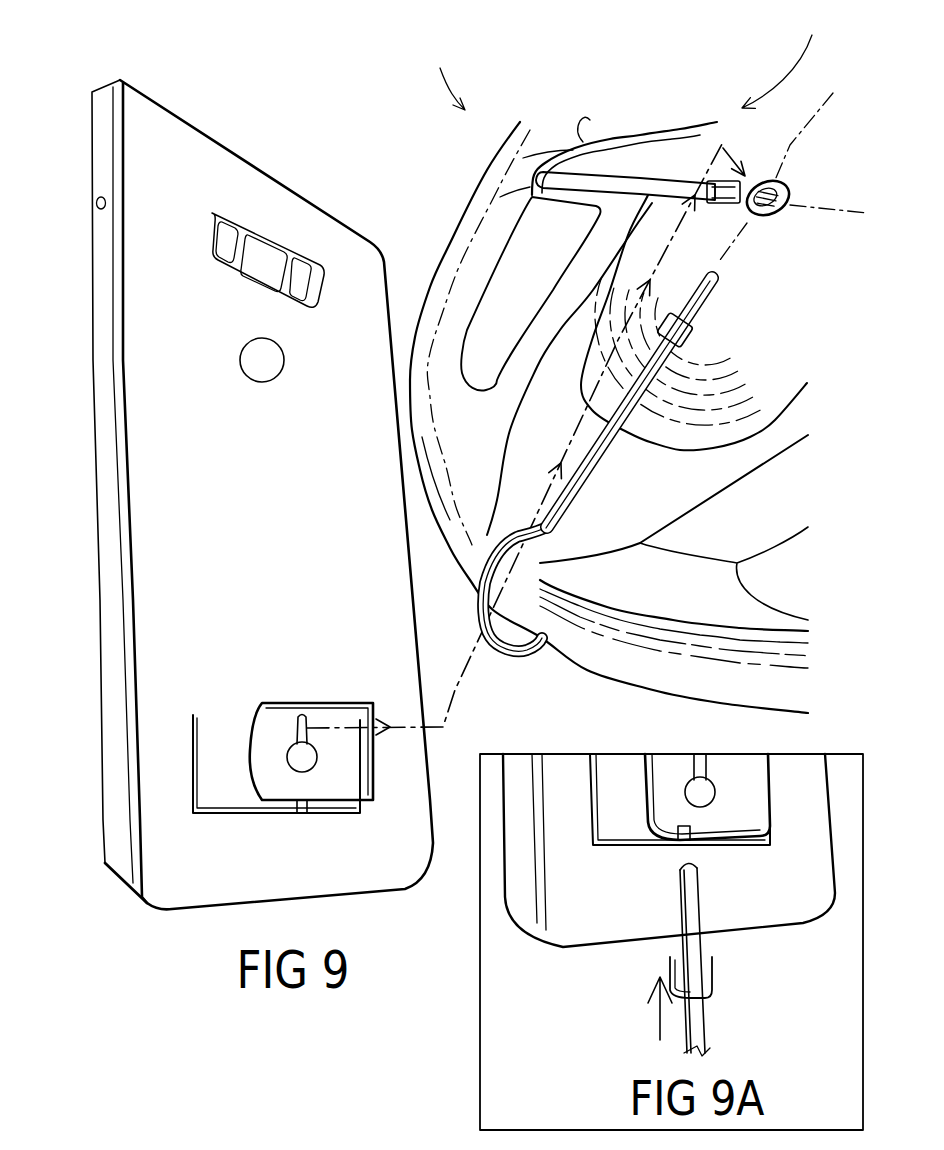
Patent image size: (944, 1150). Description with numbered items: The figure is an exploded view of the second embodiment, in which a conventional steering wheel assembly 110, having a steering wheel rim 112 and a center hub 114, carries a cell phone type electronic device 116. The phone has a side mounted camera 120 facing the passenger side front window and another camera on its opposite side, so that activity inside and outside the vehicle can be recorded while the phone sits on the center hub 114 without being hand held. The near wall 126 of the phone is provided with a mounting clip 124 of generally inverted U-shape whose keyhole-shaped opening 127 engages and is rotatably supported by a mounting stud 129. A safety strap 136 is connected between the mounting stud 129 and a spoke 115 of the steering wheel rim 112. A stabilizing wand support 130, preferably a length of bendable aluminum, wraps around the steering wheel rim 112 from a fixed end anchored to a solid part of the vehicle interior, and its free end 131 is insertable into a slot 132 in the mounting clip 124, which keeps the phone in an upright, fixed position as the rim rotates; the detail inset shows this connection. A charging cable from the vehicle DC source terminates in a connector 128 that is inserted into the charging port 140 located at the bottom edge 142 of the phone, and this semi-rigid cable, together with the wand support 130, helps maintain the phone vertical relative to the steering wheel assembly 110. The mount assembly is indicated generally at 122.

In FIG. 9, the steering wheel assembly 110 is at (440, 72).
In FIG. 9, the steering wheel rim 112 is at (613, 658).
In FIG. 9, the center hub 114 is at (770, 388).
In FIG. 9, the spoke 115 is at (578, 192).
In FIG. 9, the cell phone type electronic device 116 is at (193, 123).
In FIG. 9, the side mounted camera 120 is at (98, 200).
In FIG. 9, the mount assembly 122 is at (789, 56).
In FIG. 9, the mounting clip 124 is at (327, 700).
In FIG. 9A, the mounting clip 124 is at (763, 778).
In FIG. 9, the near wall 126 is at (272, 468).
In FIG. 9, the keyhole-shaped opening 127 is at (287, 758).
In FIG. 9, the connector 128 is at (692, 330).
In FIG. 9A, the connector 128 is at (712, 968).
In FIG. 9, the mounting stud 129 is at (765, 180).
In FIG. 9, the stabilizing wand support 130 is at (516, 655).
In FIG. 9, the free end 131 is at (718, 283).
In FIG. 9A, the free end 131 is at (700, 913).
In FIG. 9, the slot 132 is at (291, 813).
In FIG. 9A, the slot 132 is at (683, 845).
In FIG. 9, the safety strap 136 is at (612, 178).
In FIG. 9, the charging port 140 is at (733, 205).
In FIG. 9, the bottom edge 142 is at (566, 140).